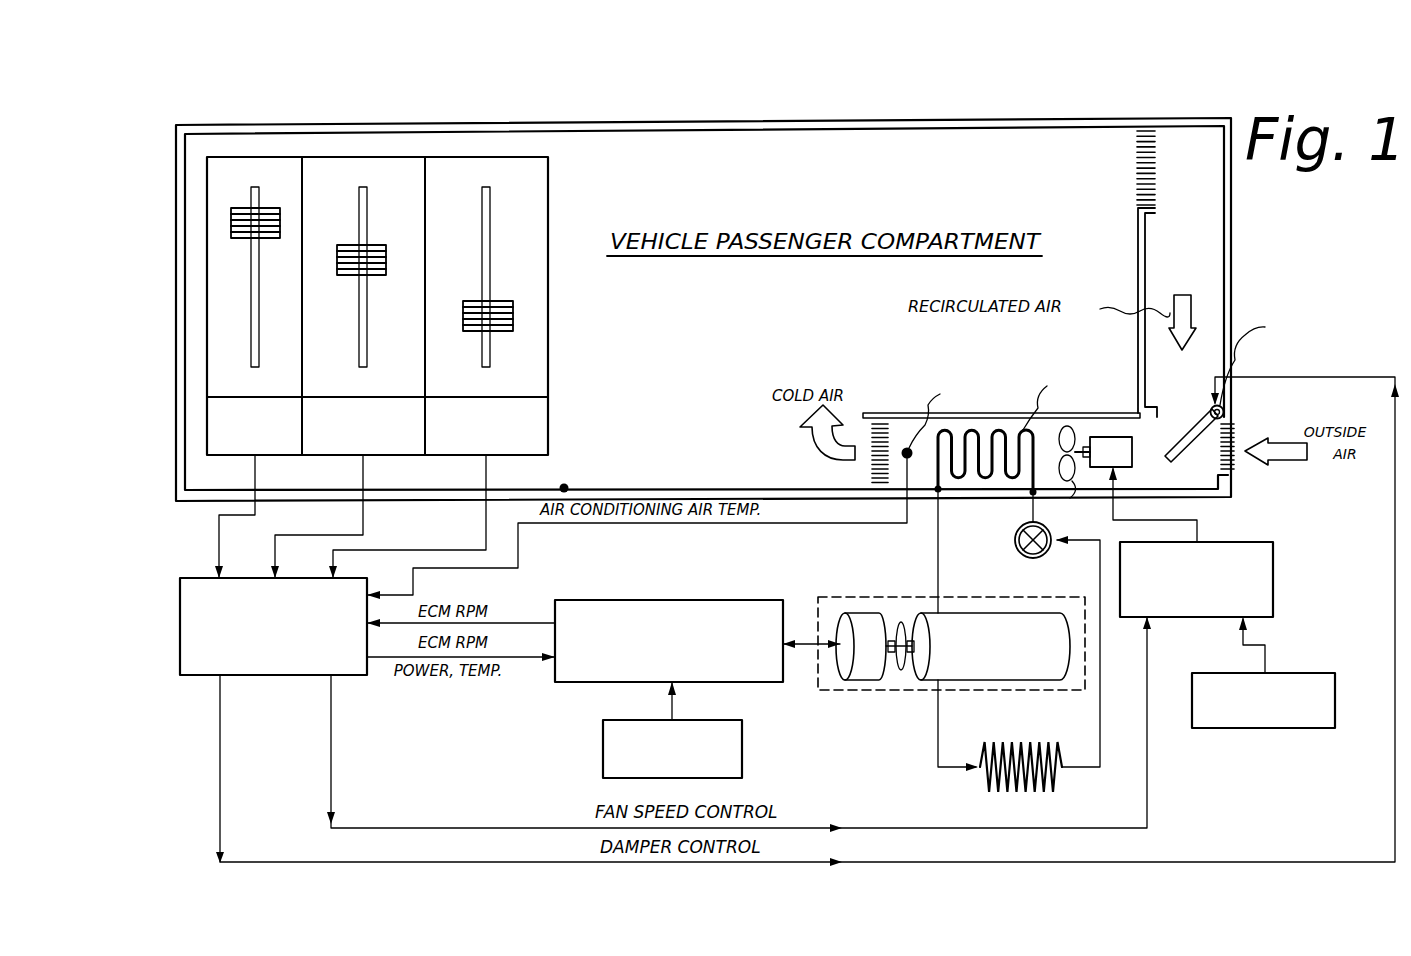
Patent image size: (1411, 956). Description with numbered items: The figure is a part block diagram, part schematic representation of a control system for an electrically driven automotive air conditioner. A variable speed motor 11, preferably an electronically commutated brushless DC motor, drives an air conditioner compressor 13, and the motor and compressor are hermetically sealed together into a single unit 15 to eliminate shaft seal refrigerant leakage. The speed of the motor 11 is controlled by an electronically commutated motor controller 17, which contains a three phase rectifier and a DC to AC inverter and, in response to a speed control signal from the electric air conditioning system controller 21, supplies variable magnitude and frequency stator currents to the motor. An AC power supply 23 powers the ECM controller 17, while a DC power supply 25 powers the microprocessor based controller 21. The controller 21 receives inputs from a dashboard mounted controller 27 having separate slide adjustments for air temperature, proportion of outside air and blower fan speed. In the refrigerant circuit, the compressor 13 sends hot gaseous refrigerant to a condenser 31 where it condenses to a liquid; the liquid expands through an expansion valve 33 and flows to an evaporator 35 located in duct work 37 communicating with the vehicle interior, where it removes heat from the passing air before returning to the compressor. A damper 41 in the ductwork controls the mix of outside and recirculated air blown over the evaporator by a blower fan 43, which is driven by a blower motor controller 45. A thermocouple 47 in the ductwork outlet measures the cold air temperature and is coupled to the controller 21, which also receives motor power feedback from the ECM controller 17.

The variable speed motor 11 is at (866, 612).
The air conditioner compressor 13 is at (985, 680).
The single unit 15 is at (905, 690).
The electronically commutated motor controller 17 is at (720, 600).
The electric air conditioning system controller 21 is at (287, 675).
The AC power supply 23 is at (603, 742).
The DC power supply 25 is at (1315, 673).
The dashboard mounted controller 27 is at (548, 198).
The condenser 31 is at (1060, 745).
The expansion valve 33 is at (1015, 540).
The evaporator 35 is at (1003, 479).
The duct work 37 is at (1156, 352).
The damper 41 is at (1194, 448).
The blower fan 43 is at (1111, 437).
The blower motor controller 45 is at (1273, 570).
The thermocouple 47 is at (908, 458).